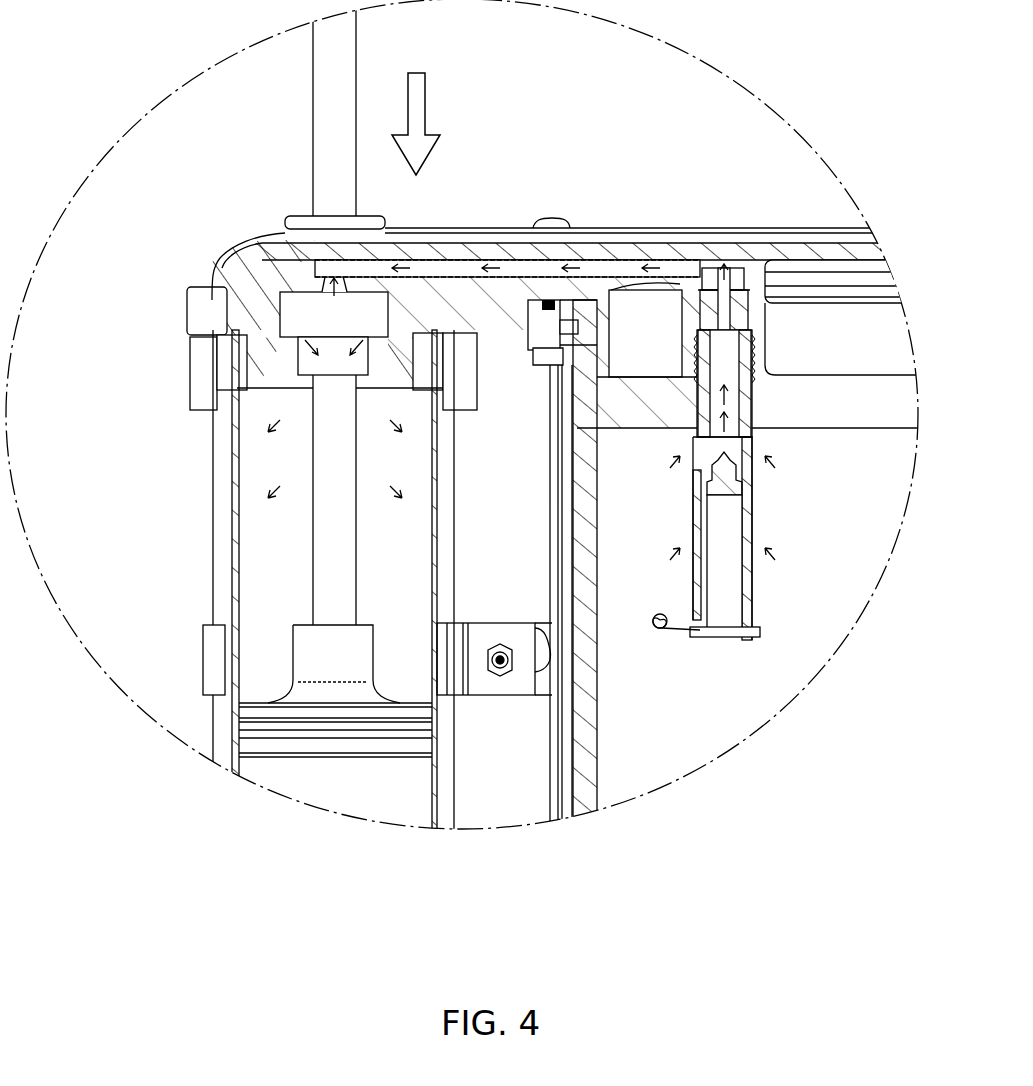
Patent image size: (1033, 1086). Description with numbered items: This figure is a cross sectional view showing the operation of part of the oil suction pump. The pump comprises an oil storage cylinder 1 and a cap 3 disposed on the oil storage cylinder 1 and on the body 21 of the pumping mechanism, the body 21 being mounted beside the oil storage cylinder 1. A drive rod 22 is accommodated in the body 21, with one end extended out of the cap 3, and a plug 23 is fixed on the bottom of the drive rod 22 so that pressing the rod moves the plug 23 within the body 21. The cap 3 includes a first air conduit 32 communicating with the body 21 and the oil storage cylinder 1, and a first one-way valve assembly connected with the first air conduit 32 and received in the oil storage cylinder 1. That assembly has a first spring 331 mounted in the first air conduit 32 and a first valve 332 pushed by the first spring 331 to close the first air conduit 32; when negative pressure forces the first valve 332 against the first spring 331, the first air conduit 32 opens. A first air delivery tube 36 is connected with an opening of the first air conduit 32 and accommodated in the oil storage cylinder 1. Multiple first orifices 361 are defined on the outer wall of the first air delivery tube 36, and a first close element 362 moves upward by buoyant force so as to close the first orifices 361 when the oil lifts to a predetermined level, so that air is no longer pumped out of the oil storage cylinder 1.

The oil storage cylinder 1 is at (597, 740).
The cap 3 is at (660, 232).
The body 21 is at (213, 505).
The drive rod 22 is at (313, 125).
The plug 23 is at (268, 700).
The first air conduit 32 is at (512, 252).
The first air delivery tube 36 is at (755, 508).
The first spring 331 is at (713, 297).
The first valve 332 is at (748, 314).
The first orifices 361 is at (694, 532).
The first close element 362 is at (750, 590).